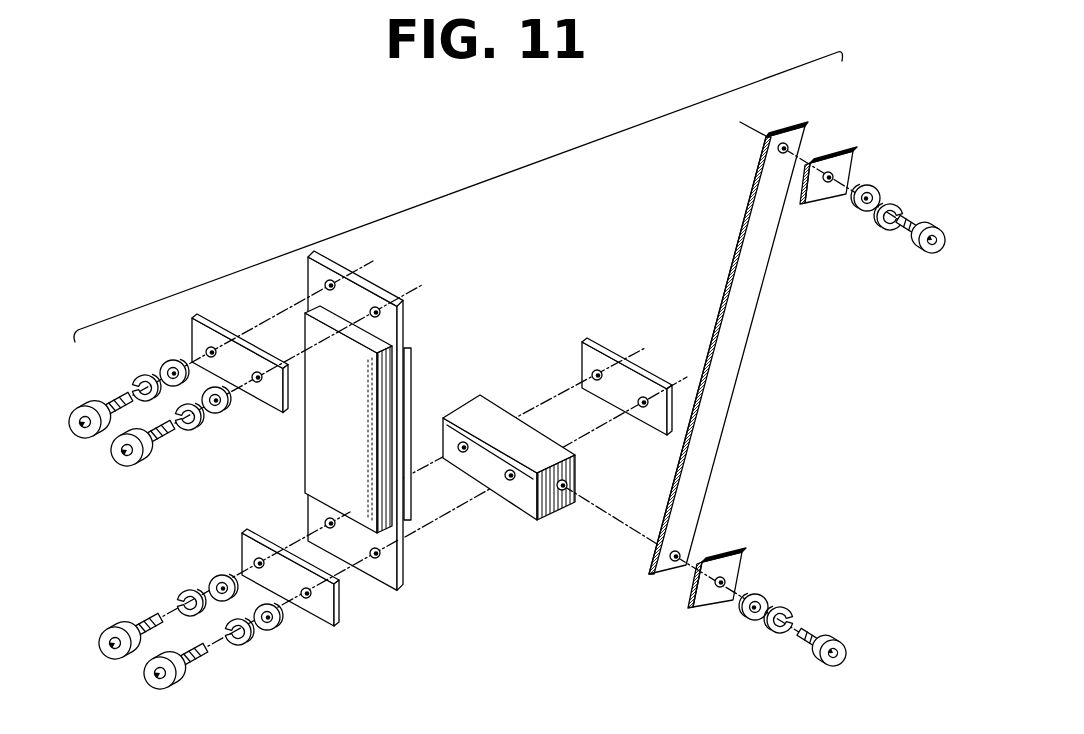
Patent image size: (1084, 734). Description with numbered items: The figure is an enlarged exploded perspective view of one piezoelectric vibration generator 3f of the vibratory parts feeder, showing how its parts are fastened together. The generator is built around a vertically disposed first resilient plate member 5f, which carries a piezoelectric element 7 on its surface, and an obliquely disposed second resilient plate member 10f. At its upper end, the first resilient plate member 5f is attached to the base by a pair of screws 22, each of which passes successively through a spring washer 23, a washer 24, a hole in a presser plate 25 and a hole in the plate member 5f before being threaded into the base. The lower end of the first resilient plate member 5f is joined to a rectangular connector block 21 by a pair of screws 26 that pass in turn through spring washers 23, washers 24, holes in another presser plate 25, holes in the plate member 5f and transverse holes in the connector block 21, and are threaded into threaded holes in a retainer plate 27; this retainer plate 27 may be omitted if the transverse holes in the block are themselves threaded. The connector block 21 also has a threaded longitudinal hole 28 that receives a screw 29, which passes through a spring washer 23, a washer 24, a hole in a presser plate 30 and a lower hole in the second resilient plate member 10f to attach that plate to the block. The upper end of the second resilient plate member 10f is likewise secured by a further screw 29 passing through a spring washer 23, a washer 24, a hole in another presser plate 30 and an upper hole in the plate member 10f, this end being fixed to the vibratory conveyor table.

The piezoelectric vibration generator 3f is at (499, 177).
The first resilient plate member 5f is at (362, 296).
The piezoelectric element 7 is at (412, 386).
The second resilient plate member 10f is at (720, 428).
The connector block 21 is at (522, 498).
The screw 22 is at (143, 458).
The spring washer 23 is at (192, 432).
The washer 24 is at (223, 414).
The presser plate 25 is at (272, 412).
The screw 26 is at (176, 688).
The retainer plate 27 is at (605, 347).
The threaded longitudinal hole 28 is at (563, 491).
The screw 29 is at (922, 251).
The presser plate 30 is at (842, 156).